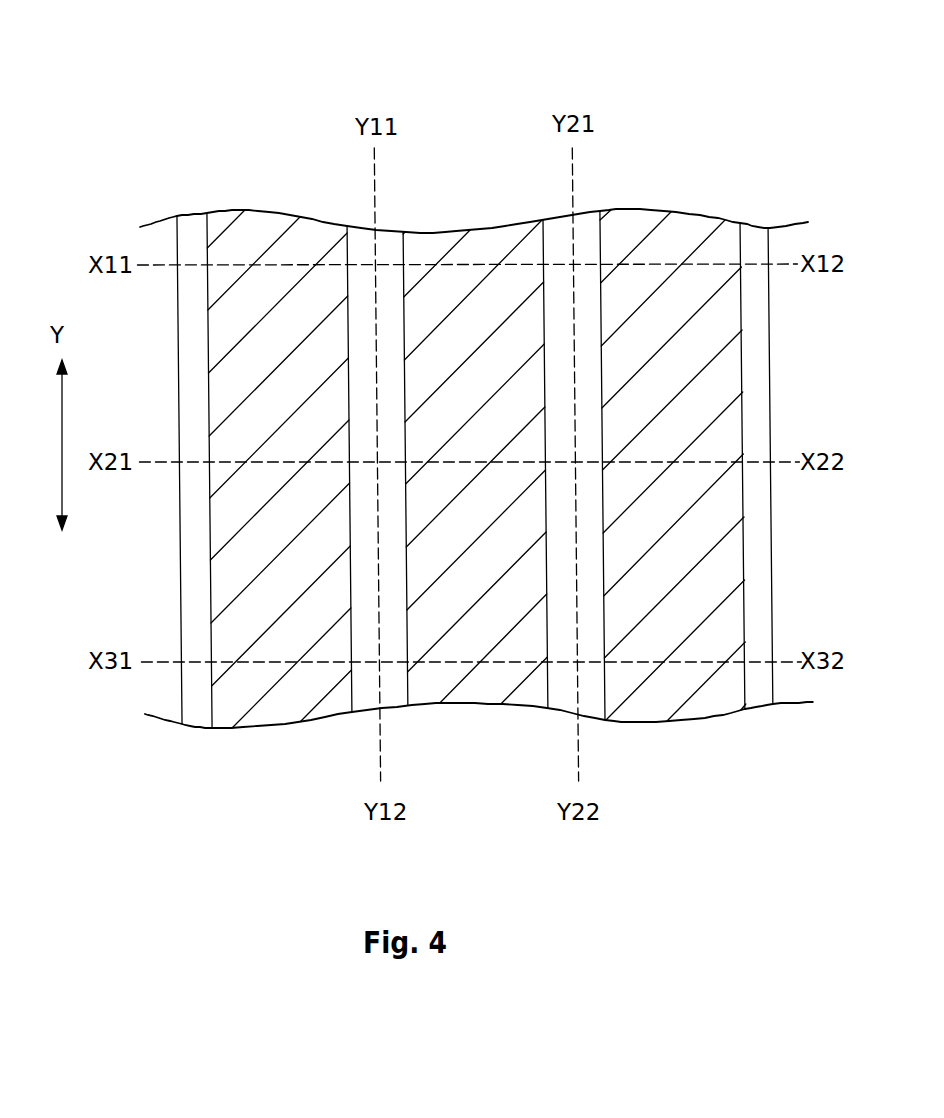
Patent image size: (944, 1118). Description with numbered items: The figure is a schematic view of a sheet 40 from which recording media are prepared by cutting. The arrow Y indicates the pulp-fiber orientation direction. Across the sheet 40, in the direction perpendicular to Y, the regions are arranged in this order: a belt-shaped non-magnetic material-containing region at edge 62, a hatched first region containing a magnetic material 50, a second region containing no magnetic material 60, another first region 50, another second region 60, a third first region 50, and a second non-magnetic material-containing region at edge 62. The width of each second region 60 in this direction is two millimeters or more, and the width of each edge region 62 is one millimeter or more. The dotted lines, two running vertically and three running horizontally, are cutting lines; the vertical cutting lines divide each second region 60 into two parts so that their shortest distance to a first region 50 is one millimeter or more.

The sheet 40 is at (766, 100).
The first region containing a magnetic material 50 is at (255, 228).
The second region containing no magnetic material 60 is at (392, 238).
The non-magnetic material-containing region at edge 62 is at (193, 228).